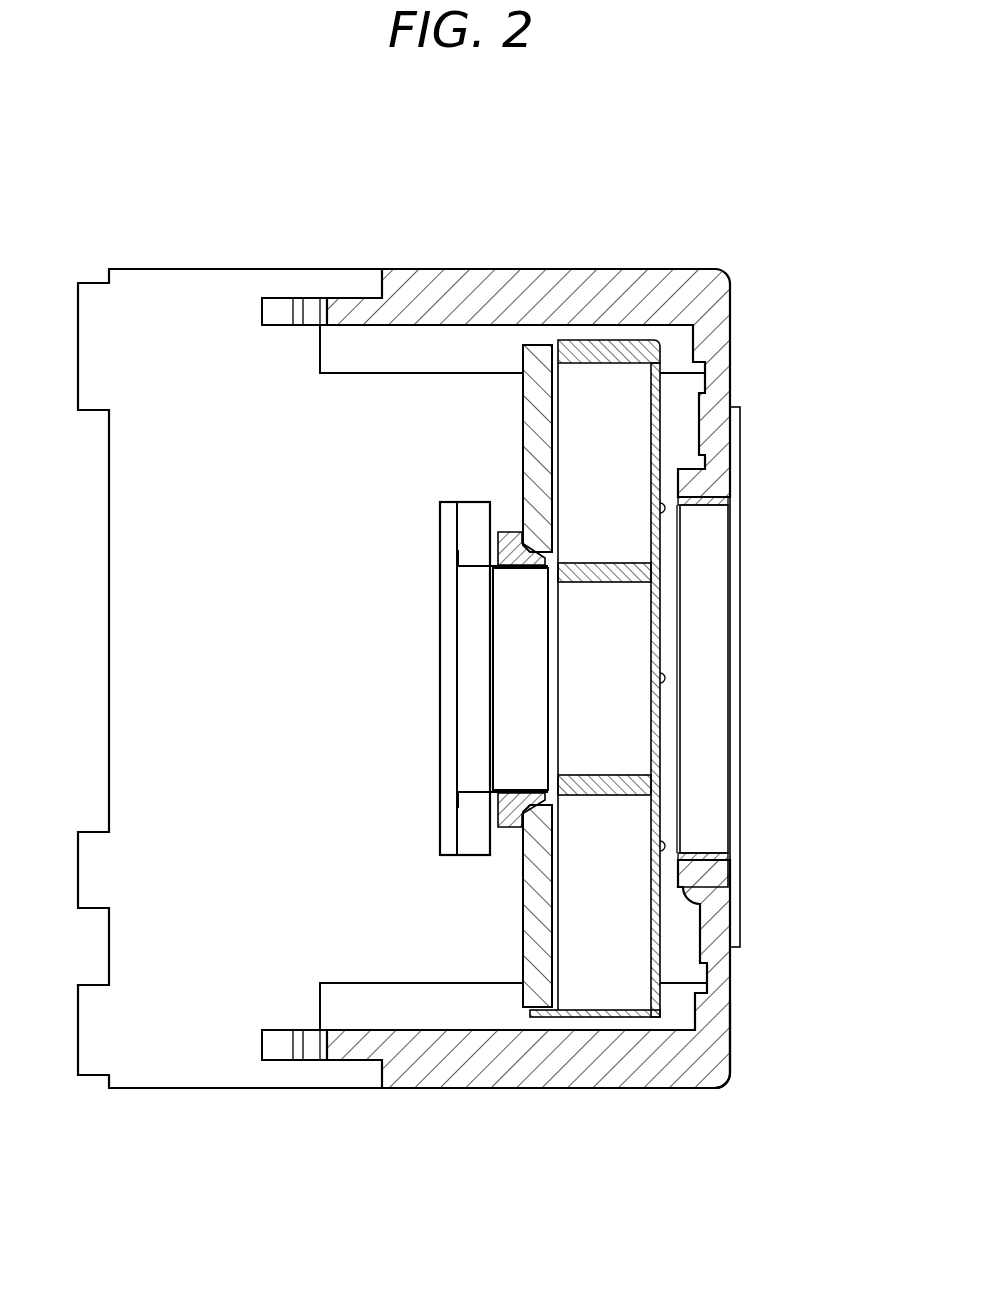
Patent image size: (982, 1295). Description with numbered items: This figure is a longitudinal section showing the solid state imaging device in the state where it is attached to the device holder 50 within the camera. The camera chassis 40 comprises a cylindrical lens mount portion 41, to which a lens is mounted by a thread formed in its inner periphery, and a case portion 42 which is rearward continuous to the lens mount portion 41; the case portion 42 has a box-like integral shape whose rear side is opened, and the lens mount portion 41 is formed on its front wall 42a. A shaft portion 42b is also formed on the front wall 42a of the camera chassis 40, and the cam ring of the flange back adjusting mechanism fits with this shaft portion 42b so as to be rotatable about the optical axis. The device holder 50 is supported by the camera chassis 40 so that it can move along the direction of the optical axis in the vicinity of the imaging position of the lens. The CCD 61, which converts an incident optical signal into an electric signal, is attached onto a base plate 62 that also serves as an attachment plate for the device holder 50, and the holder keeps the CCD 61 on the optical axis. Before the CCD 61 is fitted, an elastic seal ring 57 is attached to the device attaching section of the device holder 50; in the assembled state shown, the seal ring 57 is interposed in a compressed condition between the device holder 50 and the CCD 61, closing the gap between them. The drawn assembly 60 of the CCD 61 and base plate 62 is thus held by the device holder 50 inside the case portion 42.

The camera chassis 40 is at (650, 297).
The lens mount portion 41 is at (712, 853).
The case portion 42 is at (636, 1052).
The front wall 42a is at (700, 1048).
The shaft portion 42b is at (703, 918).
The device holder 50 is at (532, 368).
The seal ring 57 is at (500, 543).
The movable body 60 is at (440, 766).
The CCD 61 is at (523, 617).
The base plate 62 is at (450, 655).